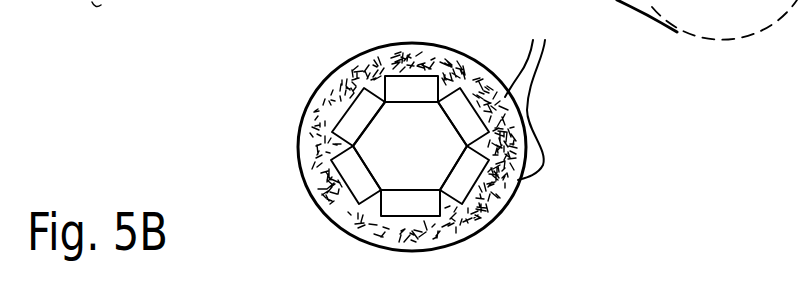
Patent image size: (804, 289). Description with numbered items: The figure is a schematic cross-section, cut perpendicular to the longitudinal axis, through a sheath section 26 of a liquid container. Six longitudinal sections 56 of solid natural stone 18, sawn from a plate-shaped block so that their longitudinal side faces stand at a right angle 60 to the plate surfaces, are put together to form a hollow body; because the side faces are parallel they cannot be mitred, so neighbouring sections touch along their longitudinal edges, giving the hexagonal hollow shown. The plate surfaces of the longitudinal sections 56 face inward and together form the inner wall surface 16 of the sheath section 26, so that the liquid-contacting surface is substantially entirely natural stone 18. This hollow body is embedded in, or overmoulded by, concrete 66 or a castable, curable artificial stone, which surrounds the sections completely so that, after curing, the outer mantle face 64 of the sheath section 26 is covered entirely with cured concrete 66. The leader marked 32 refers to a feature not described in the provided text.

The inner wall surface 16 is at (365, 128).
The solid natural stone 18 is at (408, 96).
The sheath section 26 is at (552, 141).
The tension cable 32 is at (535, 52).
The longitudinal sections 56 is at (556, 94).
The acute angle 60 is at (688, 5).
The outer mantle face 64 is at (497, 213).
The concrete 66 is at (420, 241).